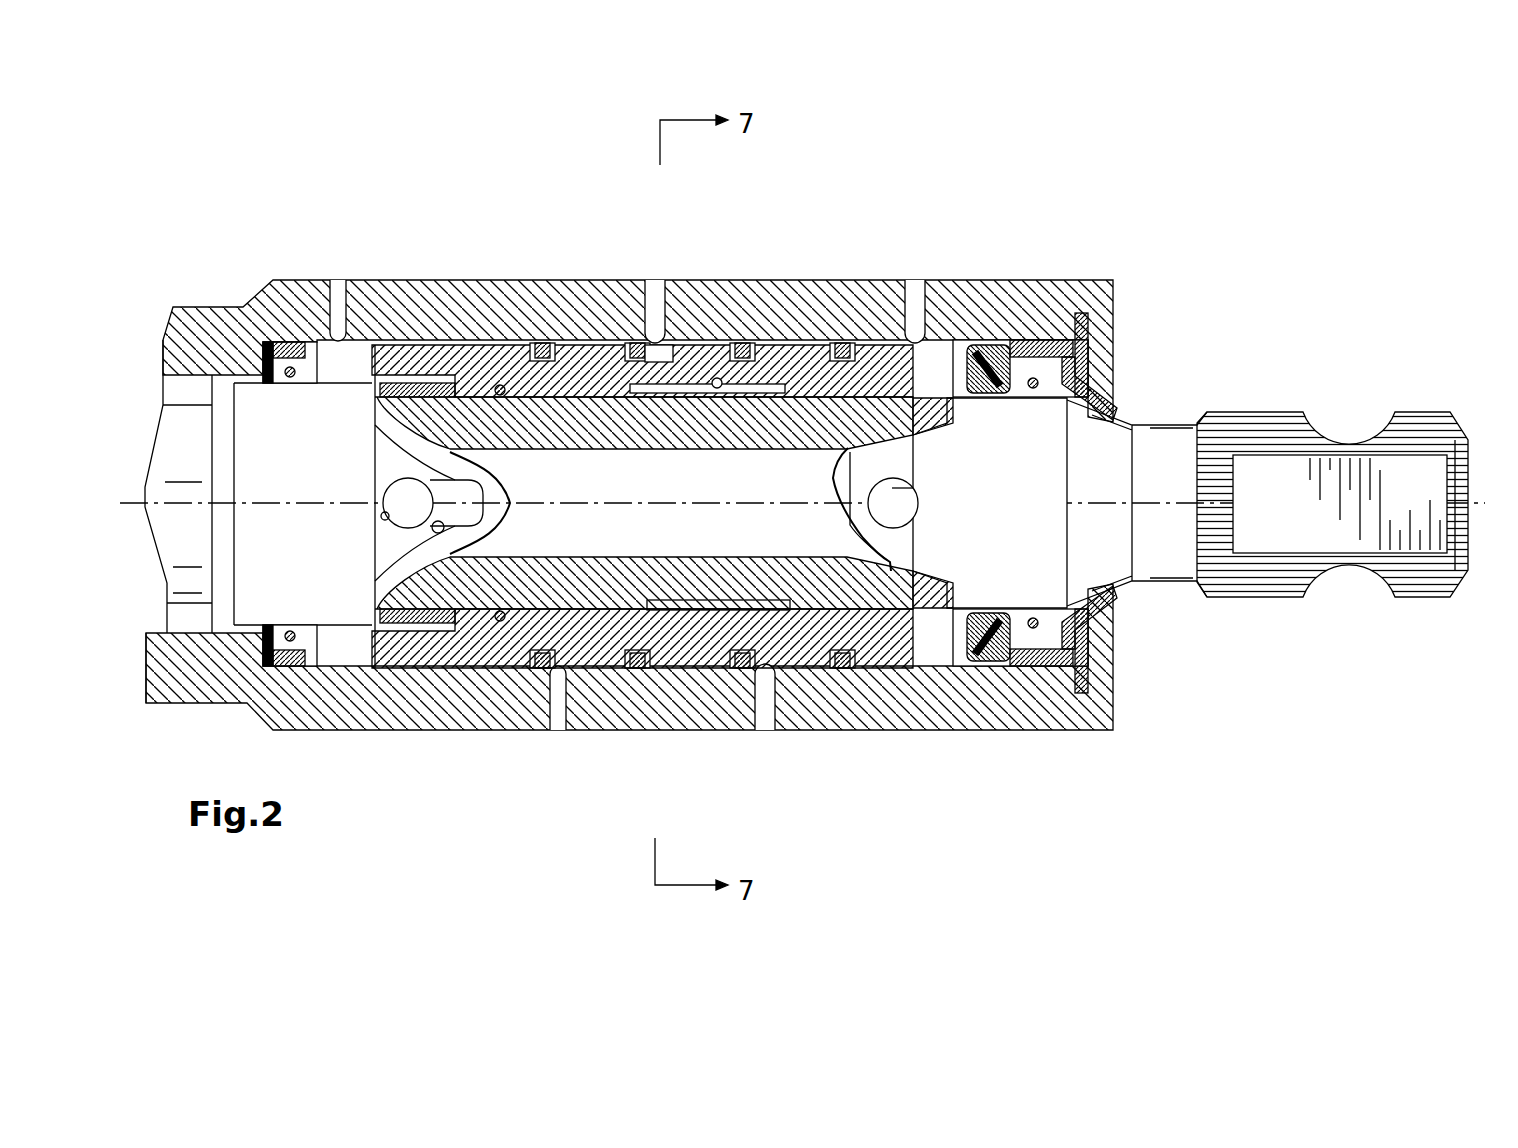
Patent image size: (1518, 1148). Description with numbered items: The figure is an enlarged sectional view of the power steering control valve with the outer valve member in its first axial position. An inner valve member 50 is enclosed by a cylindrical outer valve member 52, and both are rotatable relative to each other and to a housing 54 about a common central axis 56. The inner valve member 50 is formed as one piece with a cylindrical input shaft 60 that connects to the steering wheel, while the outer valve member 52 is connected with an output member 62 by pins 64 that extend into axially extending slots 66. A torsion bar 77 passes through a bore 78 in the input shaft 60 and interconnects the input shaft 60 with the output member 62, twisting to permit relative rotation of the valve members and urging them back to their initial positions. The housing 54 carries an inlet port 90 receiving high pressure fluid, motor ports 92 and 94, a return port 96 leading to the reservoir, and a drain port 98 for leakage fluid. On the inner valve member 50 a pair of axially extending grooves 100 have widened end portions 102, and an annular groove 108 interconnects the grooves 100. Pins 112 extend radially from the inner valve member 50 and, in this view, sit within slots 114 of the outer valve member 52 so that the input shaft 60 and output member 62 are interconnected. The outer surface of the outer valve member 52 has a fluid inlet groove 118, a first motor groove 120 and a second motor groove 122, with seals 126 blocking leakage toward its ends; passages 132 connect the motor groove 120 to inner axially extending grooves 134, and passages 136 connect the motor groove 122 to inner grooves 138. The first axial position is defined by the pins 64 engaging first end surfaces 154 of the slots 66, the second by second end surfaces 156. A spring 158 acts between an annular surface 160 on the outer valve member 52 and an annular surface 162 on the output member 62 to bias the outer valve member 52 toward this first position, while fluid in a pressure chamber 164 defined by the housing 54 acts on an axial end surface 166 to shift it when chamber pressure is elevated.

The inner valve member 50 is at (420, 388).
The outer valve member 52 is at (422, 683).
The housing 54 is at (1100, 297).
The central axis 56 is at (132, 503).
The input shaft 60 is at (1245, 413).
The output member 62 is at (220, 413).
The pins 64 is at (405, 497).
The slots 66 is at (385, 570).
The torsion bar 77 is at (637, 493).
The bore 78 is at (697, 553).
The inlet port 90 is at (657, 300).
The motor port 92 is at (762, 730).
The motor port 94 is at (560, 730).
The return port 96 is at (918, 292).
The drain port 98 is at (338, 290).
The axially extending grooves 100 is at (938, 405).
The widened end portions 102 is at (708, 385).
The annular groove 108 is at (787, 397).
The pins 112 is at (917, 480).
The slots 114 is at (873, 513).
The fluid inlet groove 118 is at (690, 380).
The first motor groove 120 is at (813, 360).
The second motor groove 122 is at (560, 345).
The seals 126 is at (634, 345).
The passages 132 is at (800, 655).
The axially extending grooves 134 is at (600, 650).
The passages 136 is at (590, 355).
The axially extending grooves 138 is at (740, 390).
The first end surfaces 154 is at (383, 518).
The second end surfaces 156 is at (376, 425).
The spring 158 is at (485, 655).
The annular surface 160 is at (555, 400).
The annular surface 162 is at (470, 445).
The fluid pressure chamber 164 is at (945, 345).
The axial end surface 166 is at (930, 690).